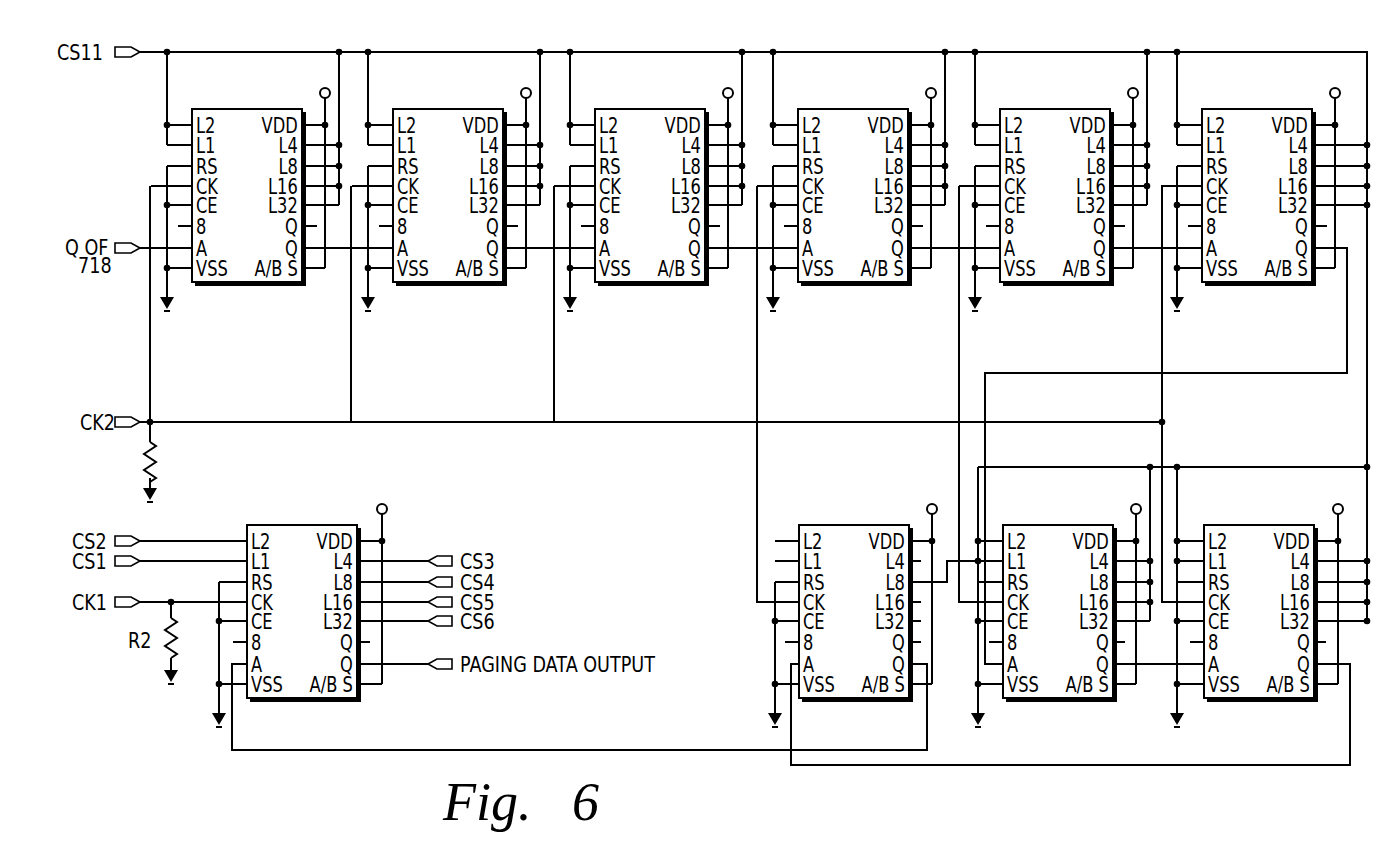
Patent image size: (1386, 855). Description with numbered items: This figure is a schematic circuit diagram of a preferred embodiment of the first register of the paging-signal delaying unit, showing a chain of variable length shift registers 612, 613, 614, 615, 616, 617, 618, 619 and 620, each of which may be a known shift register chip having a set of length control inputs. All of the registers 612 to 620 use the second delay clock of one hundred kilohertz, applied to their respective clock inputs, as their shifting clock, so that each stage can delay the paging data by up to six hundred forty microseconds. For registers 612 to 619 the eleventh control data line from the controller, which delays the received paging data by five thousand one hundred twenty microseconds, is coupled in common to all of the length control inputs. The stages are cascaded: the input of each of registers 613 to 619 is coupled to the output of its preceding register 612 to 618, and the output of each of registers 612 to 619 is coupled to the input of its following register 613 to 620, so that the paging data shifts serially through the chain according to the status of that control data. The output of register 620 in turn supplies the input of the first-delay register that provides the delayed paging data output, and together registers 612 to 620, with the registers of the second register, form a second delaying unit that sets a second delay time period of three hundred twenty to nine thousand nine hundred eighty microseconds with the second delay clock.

The register 612 is at (246, 95).
The register 613 is at (447, 95).
The register 614 is at (649, 95).
The register 615 is at (852, 95).
The register 616 is at (1054, 95).
The register 617 is at (1256, 95).
The register 618 is at (1057, 511).
The register 619 is at (1258, 511).
The register 620 is at (853, 511).